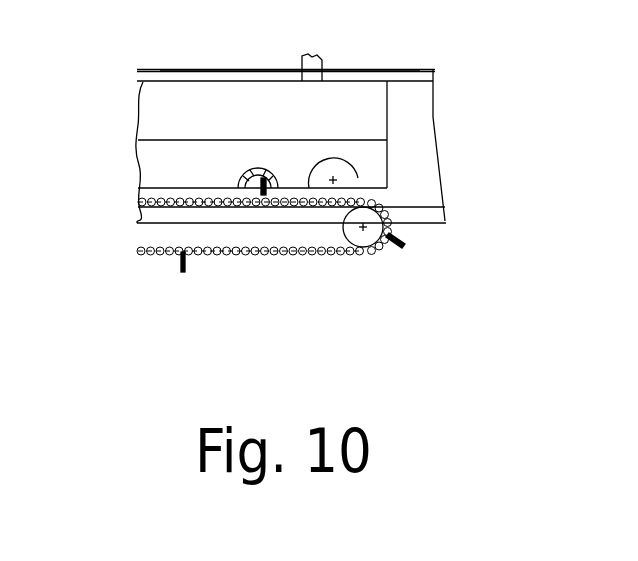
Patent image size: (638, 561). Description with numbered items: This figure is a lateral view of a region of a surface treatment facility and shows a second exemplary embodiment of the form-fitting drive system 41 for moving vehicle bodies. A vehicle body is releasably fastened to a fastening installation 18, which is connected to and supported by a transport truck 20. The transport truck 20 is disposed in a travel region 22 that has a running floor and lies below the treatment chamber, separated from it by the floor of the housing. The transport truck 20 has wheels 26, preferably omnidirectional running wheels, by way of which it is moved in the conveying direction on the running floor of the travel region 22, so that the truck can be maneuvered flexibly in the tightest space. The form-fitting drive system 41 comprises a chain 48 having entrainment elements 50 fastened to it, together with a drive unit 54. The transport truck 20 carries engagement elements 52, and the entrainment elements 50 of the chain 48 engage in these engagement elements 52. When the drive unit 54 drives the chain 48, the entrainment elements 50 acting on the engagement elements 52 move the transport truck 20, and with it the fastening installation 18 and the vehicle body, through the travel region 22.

The fastening installation 18 is at (325, 61).
The transport truck 20 is at (232, 80).
The travel region 22 is at (416, 96).
The wheel 26 is at (358, 178).
The form-fitting drive system 41 is at (429, 309).
The chain 48 is at (155, 251).
The entrainment element 50 is at (265, 178).
The engagement element 52 is at (243, 184).
The drive unit 54 is at (380, 228).